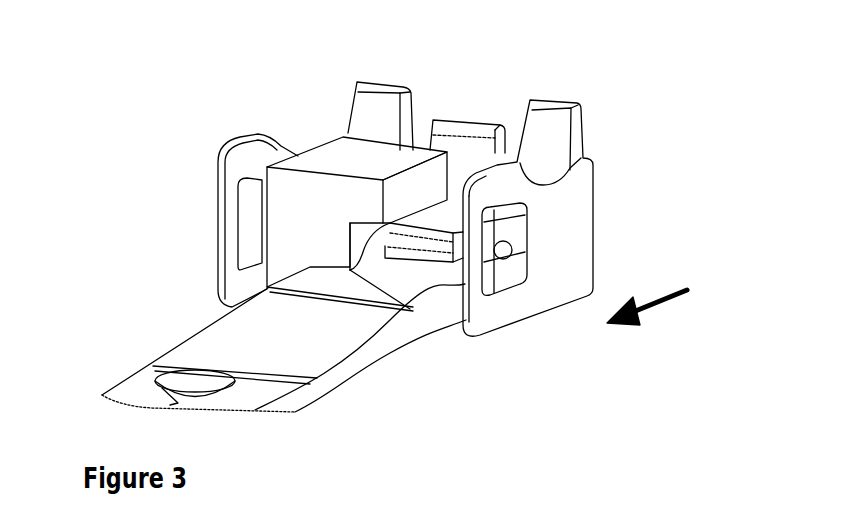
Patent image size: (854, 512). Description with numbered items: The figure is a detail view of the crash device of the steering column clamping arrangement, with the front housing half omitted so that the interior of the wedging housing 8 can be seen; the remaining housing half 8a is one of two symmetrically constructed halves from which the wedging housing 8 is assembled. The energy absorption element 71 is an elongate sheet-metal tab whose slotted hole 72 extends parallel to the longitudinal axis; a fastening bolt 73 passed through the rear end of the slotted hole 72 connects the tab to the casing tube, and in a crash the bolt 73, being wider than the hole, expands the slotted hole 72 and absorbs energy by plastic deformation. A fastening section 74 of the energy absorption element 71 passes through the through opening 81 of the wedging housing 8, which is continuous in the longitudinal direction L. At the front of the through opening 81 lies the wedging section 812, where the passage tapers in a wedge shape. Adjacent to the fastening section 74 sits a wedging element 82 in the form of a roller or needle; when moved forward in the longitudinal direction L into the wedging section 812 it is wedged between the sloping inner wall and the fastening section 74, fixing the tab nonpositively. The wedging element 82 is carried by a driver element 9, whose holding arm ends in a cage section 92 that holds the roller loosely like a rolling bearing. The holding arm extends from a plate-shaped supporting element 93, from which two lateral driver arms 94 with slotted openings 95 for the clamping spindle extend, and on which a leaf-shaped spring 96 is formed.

The wedging housing 8 is at (325, 104).
The housing half 8a is at (338, 165).
The through opening 81 is at (370, 252).
The wedging section 812 is at (360, 257).
The driver element 9 is at (632, 148).
The cage section 92 is at (430, 260).
The supporting element 93 is at (467, 130).
The driver arm 94 is at (510, 308).
The opening 95 is at (247, 230).
The spring 96 is at (372, 122).
The wedging element 82 is at (520, 247).
The energy absorption element 71 is at (275, 342).
The slotted hole 72 is at (153, 403).
The fastening bolt 73 is at (197, 383).
The fastening section 74 is at (347, 286).
The longitudinal direction L is at (665, 305).